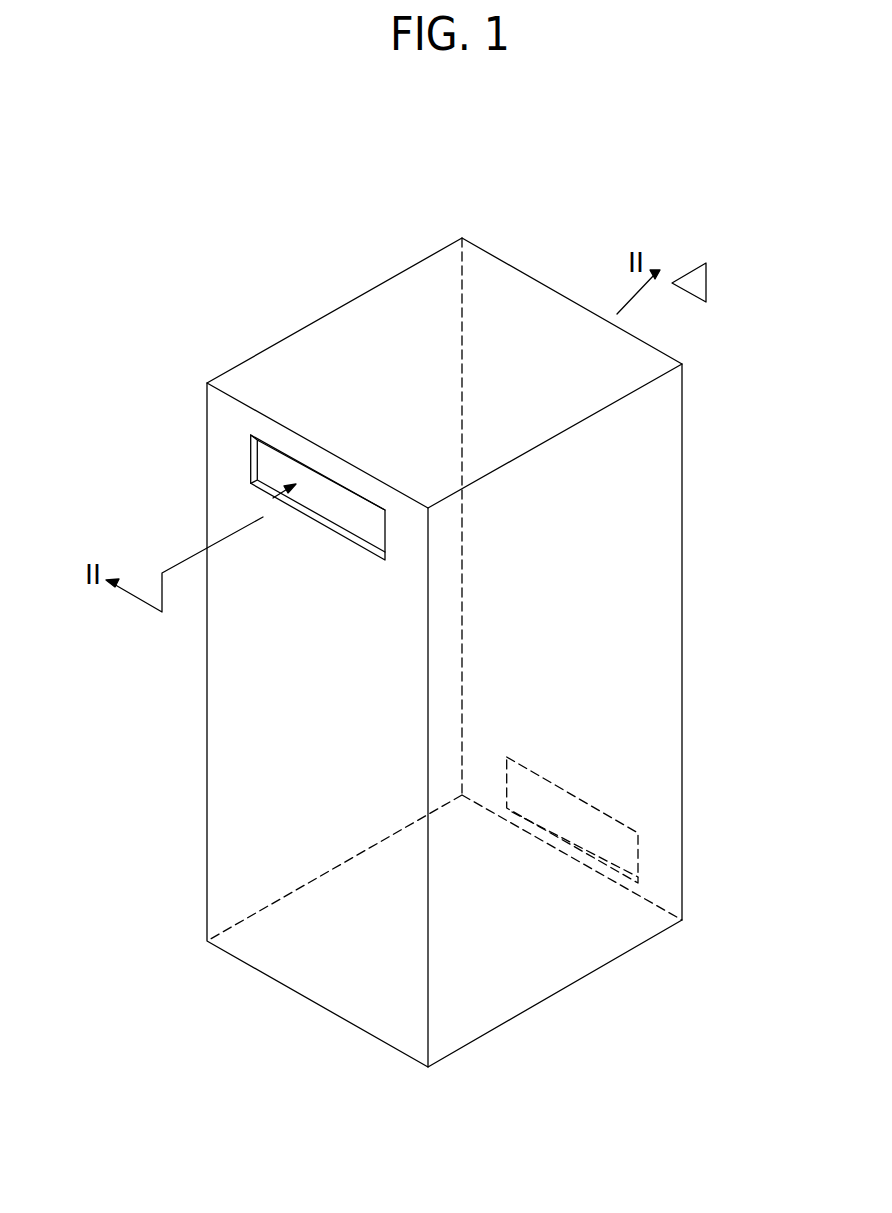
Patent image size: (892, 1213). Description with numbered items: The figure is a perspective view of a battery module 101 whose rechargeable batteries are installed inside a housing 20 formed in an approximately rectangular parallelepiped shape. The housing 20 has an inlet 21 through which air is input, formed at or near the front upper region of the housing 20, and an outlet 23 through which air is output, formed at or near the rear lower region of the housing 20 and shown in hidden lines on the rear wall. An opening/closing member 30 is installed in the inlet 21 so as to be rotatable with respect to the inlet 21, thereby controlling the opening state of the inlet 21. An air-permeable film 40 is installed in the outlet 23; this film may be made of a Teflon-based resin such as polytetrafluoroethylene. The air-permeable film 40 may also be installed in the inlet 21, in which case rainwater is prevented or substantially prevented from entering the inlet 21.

The battery module 101 is at (326, 285).
The housing 20 is at (684, 533).
The inlet 21 is at (251, 450).
The outlet 23 is at (575, 790).
The opening/closing member 30 is at (274, 498).
The air-permeable film 40 is at (276, 469).